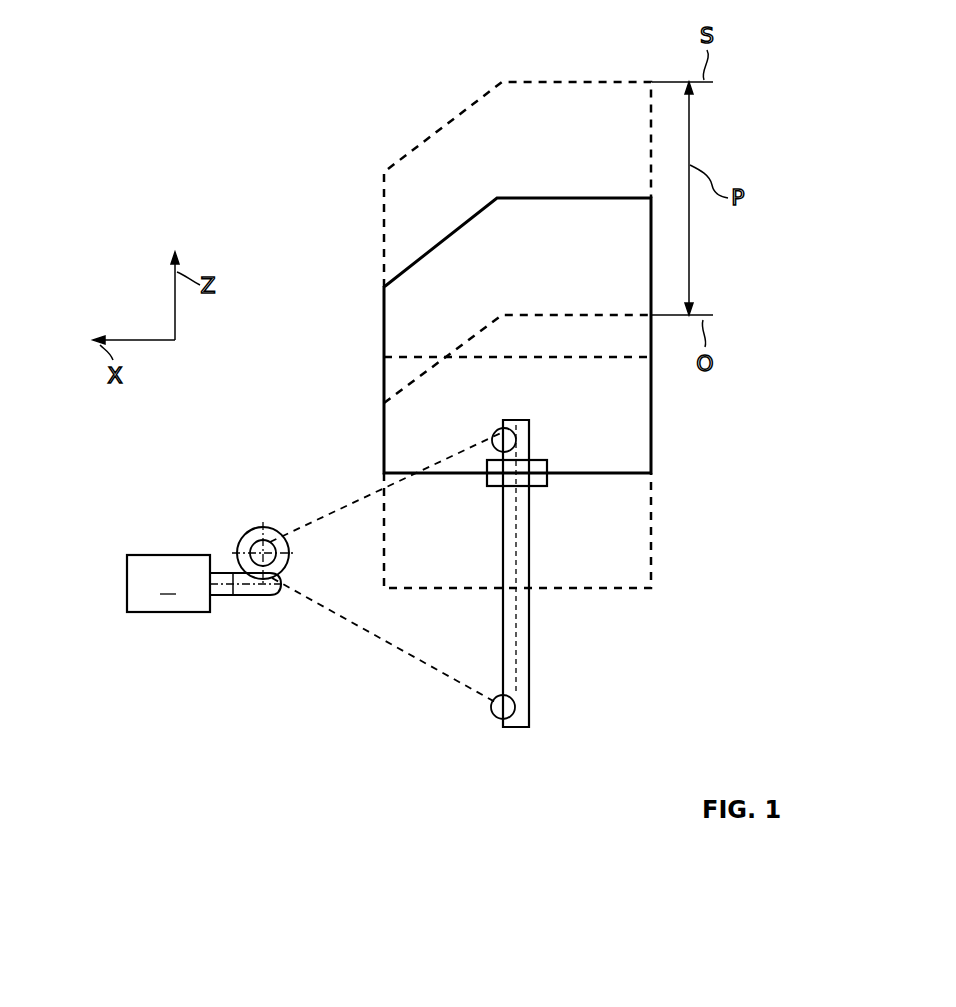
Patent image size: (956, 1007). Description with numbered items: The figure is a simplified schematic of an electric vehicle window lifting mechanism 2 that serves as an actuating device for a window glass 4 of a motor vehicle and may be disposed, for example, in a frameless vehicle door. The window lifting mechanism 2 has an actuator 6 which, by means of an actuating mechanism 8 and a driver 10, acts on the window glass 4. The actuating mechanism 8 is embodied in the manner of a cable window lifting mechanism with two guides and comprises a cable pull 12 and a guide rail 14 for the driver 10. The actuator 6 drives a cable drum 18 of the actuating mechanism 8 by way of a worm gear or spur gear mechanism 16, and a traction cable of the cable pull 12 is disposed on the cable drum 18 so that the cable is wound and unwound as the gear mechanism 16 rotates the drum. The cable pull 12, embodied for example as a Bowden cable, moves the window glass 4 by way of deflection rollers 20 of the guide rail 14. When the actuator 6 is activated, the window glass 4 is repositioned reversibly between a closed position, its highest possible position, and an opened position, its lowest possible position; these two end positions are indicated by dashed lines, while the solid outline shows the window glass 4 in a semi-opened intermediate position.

The vehicle window lifting mechanism 2 is at (241, 80).
The window glass 4 is at (402, 220).
The actuator 6 is at (168, 583).
The actuating mechanism 8 is at (376, 717).
The driver 10 is at (547, 478).
The cable pull 12 is at (320, 512).
The guide rail 14 is at (528, 628).
The gear mechanism 16 is at (253, 603).
The cable drum 18 is at (257, 548).
The deflection rollers 20 is at (508, 432).